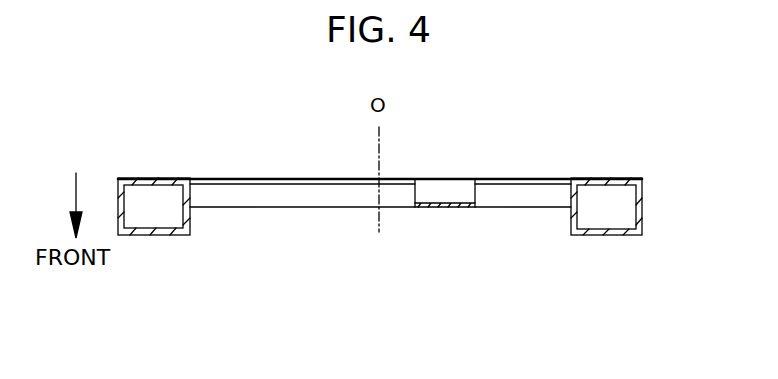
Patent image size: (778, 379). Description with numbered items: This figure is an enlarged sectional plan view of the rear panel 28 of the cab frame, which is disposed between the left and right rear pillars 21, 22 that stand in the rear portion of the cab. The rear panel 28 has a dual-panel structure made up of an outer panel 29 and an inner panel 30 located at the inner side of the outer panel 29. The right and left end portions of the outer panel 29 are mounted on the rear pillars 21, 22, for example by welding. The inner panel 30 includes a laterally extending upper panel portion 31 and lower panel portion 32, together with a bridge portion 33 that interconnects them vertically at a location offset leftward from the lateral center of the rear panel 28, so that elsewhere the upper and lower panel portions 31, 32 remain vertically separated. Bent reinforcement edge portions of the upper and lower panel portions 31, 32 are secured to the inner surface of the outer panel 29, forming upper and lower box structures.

The left rear pillar 21 is at (603, 236).
The right rear pillar 22 is at (152, 236).
The rear panel 28 is at (484, 179).
The outer panel 29 is at (267, 178).
The inner panel 30 is at (380, 248).
The upper panel portion 31 is at (380, 225).
The lower panel portion 32 is at (326, 208).
The bridge portion 33 is at (445, 236).